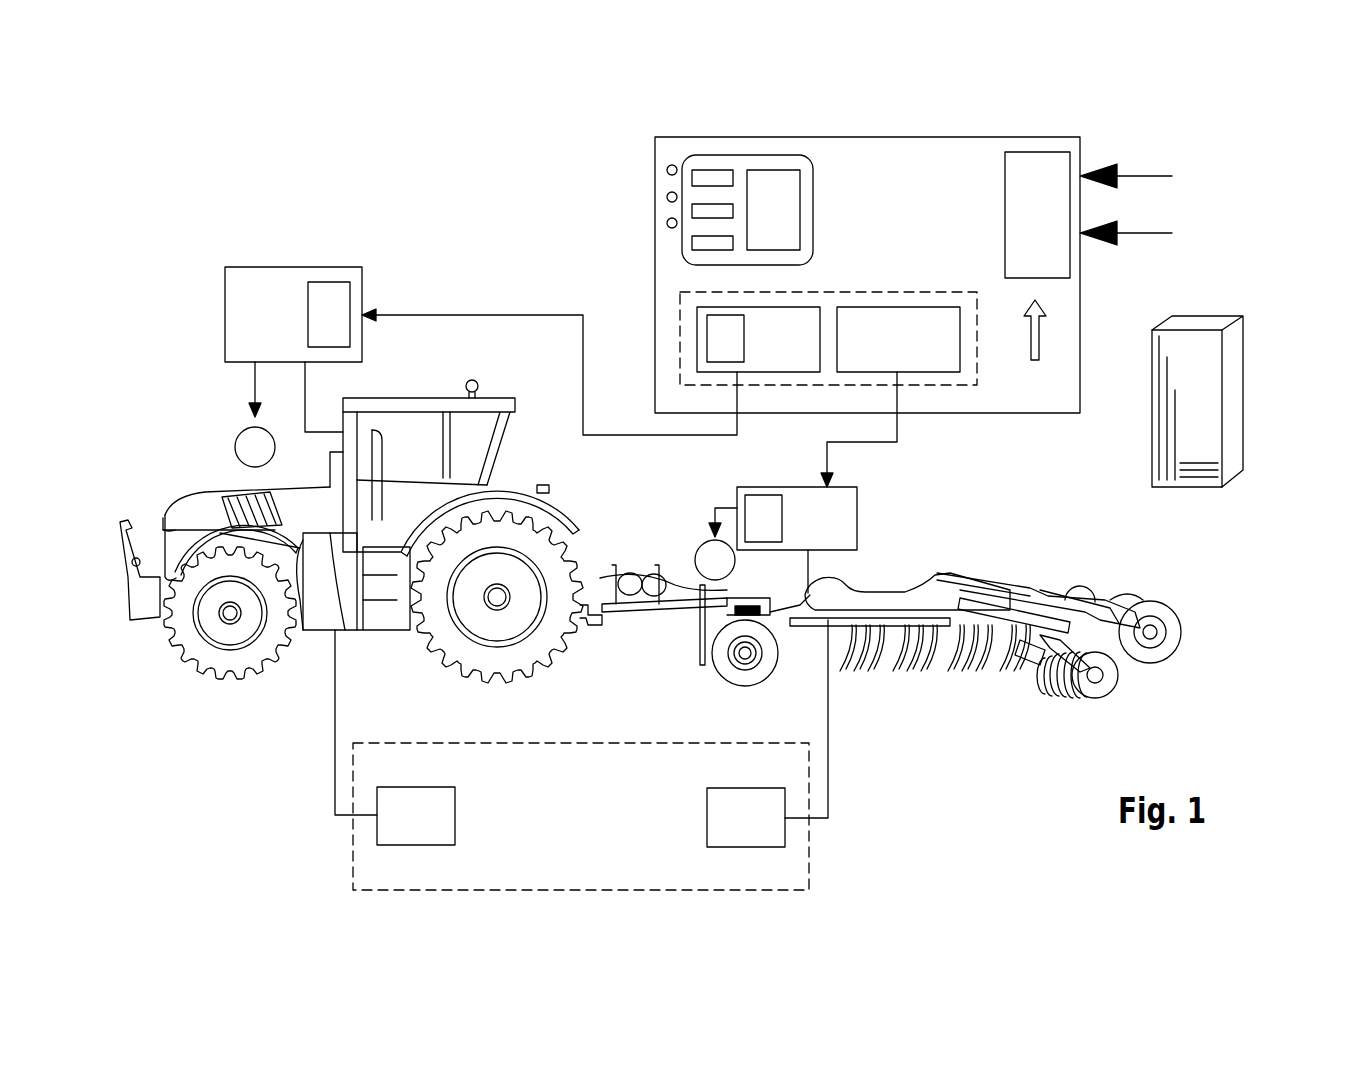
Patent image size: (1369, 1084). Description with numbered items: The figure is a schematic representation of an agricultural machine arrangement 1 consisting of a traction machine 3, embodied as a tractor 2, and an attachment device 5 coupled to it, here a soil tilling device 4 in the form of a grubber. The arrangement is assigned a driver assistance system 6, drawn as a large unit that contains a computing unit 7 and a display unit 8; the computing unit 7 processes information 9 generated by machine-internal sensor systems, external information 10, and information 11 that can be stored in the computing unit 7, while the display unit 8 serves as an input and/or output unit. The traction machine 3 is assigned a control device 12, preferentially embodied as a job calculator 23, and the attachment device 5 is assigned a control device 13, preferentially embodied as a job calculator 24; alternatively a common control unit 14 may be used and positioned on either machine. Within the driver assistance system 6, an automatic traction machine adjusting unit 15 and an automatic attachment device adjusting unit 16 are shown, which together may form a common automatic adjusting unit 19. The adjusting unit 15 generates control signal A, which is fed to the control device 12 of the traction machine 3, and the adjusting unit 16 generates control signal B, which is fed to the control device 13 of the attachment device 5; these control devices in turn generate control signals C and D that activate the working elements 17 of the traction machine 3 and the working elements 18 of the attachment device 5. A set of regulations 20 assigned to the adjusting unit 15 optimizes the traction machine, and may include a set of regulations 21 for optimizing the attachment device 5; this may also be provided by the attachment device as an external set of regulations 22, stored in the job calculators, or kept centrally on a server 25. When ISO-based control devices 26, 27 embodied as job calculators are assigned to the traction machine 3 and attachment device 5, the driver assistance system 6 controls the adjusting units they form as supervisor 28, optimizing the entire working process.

The agricultural machine arrangement 1 is at (332, 561).
The tractor 2 is at (332, 561).
The traction machine 3 is at (187, 503).
The soil tilling device 4 is at (924, 624).
The attachment device 5 is at (1124, 590).
The driver assistance system 6 is at (1060, 357).
The computing unit 7 is at (1037, 215).
The display unit 8 is at (748, 165).
The information generated by machine-internal sensor systems 9 is at (1139, 176).
The external information 10 is at (1155, 233).
The stored information 11 is at (1032, 343).
The control device 12 is at (241, 314).
The control device 13 is at (840, 512).
The common control unit 14 is at (237, 322).
The automatic traction machine adjusting unit 15 is at (696, 330).
The automatic attachment device adjusting unit 16 is at (898, 339).
The working elements of the traction machine 17 is at (255, 447).
The working elements of the attachment device 18 is at (715, 560).
The common automatic adjusting unit 19 is at (694, 292).
The set of regulations 20 is at (658, 325).
The set of regulations for optimizing the attachment device 21 is at (718, 345).
The external set of regulations 22 is at (323, 295).
The job calculator 23 is at (259, 299).
The job calculator 24 is at (798, 499).
The server 25 is at (1231, 308).
The ISO-based control device 26 is at (447, 828).
The ISO-based control device 27 is at (713, 836).
The supervisor 28 is at (577, 757).